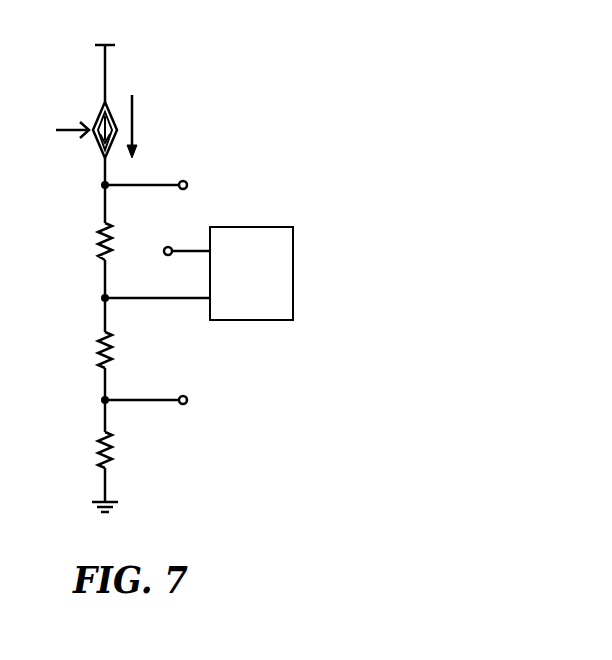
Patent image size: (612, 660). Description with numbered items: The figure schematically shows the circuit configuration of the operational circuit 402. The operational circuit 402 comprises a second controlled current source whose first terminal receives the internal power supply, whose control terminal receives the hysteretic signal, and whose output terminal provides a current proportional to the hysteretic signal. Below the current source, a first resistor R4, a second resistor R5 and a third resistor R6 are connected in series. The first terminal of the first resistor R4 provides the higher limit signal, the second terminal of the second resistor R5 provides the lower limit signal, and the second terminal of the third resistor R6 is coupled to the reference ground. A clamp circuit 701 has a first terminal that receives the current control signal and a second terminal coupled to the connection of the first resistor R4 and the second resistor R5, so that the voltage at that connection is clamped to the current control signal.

The operational circuit 402 is at (253, 58).
The clamp circuit 701 is at (235, 320).
The first resistor R4 is at (83, 241).
The second resistor R5 is at (83, 350).
The third resistor R6 is at (87, 450).